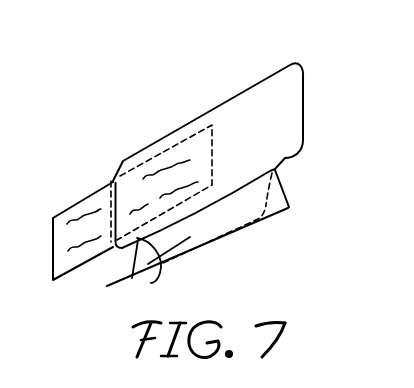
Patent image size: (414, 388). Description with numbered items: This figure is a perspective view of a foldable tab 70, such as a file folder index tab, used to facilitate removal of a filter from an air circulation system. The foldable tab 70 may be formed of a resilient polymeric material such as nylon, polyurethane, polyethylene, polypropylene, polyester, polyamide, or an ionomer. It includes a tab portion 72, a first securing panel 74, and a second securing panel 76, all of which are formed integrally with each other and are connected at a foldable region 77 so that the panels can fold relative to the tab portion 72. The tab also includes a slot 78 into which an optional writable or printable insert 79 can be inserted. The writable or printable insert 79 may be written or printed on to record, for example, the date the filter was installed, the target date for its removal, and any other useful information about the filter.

The foldable tab 70 is at (161, 87).
The tab portion 72 is at (285, 105).
The first securing panel 74 is at (283, 207).
The second securing panel 76 is at (216, 226).
The foldable region 77 is at (128, 277).
The slot 78 is at (113, 179).
The writable or printable insert 79 is at (67, 208).